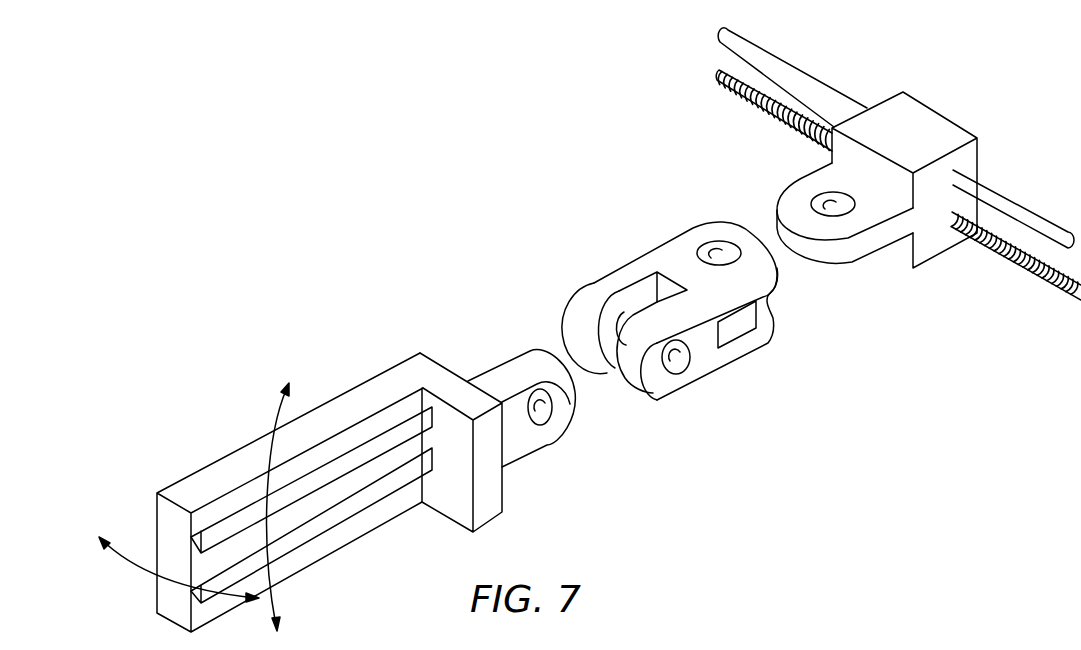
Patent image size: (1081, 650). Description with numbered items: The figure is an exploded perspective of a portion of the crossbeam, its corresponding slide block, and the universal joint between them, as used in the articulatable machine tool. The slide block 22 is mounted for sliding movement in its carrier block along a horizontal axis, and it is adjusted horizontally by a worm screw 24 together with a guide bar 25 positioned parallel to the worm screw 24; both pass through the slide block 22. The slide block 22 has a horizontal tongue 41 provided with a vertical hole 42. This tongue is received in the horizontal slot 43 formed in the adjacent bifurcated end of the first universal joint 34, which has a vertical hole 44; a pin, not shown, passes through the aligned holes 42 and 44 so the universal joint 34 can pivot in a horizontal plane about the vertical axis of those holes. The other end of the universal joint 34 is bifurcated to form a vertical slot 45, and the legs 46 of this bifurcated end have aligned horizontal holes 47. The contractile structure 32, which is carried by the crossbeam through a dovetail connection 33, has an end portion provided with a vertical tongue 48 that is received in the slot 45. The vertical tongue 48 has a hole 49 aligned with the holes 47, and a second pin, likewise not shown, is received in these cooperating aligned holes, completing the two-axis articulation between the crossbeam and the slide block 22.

The slide block 22 is at (938, 133).
The worm screw 24 is at (732, 103).
The guide bar 25 is at (796, 80).
The contractile structure 32 is at (311, 422).
The dovetail connection 33 is at (214, 537).
The first universal joint 34 is at (662, 250).
The horizontal tongue 41 is at (852, 250).
The vertical hole 42 is at (818, 206).
The horizontal slot 43 is at (749, 316).
The vertical hole 44 is at (711, 258).
The vertical slot 45 is at (644, 300).
The legs 46 is at (578, 346).
The horizontal holes 47 is at (576, 346).
The vertical tongue 48 is at (500, 372).
The hole 49 is at (546, 428).